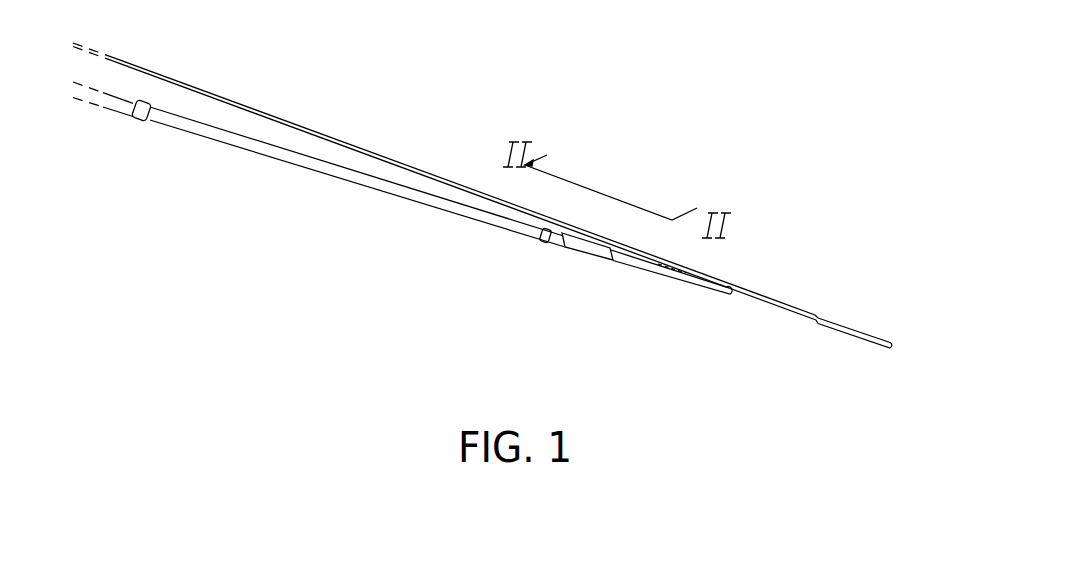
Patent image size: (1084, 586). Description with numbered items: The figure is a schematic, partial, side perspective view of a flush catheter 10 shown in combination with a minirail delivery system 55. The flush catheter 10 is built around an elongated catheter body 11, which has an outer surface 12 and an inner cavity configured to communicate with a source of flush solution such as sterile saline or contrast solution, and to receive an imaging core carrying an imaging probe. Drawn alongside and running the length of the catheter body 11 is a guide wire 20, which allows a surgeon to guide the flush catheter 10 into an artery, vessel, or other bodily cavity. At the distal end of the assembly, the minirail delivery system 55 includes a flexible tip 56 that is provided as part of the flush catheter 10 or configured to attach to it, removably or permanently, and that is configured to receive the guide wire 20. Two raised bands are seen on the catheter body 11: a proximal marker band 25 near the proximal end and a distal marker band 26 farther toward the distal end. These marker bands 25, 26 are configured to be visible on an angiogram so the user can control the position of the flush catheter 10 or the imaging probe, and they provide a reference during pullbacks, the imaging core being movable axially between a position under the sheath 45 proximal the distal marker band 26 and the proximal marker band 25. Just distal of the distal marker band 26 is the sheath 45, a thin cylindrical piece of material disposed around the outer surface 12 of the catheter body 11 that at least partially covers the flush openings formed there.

The flush catheter 10 is at (282, 153).
The catheter body 11 is at (351, 172).
The outer surface 12 is at (397, 194).
The guide wire 20 is at (204, 90).
The proximal marker band 25 is at (137, 125).
The distal marker band 26 is at (540, 228).
The sheath 45 is at (602, 253).
The minirail delivery system 55 is at (792, 249).
The flexible tip 56 is at (753, 295).